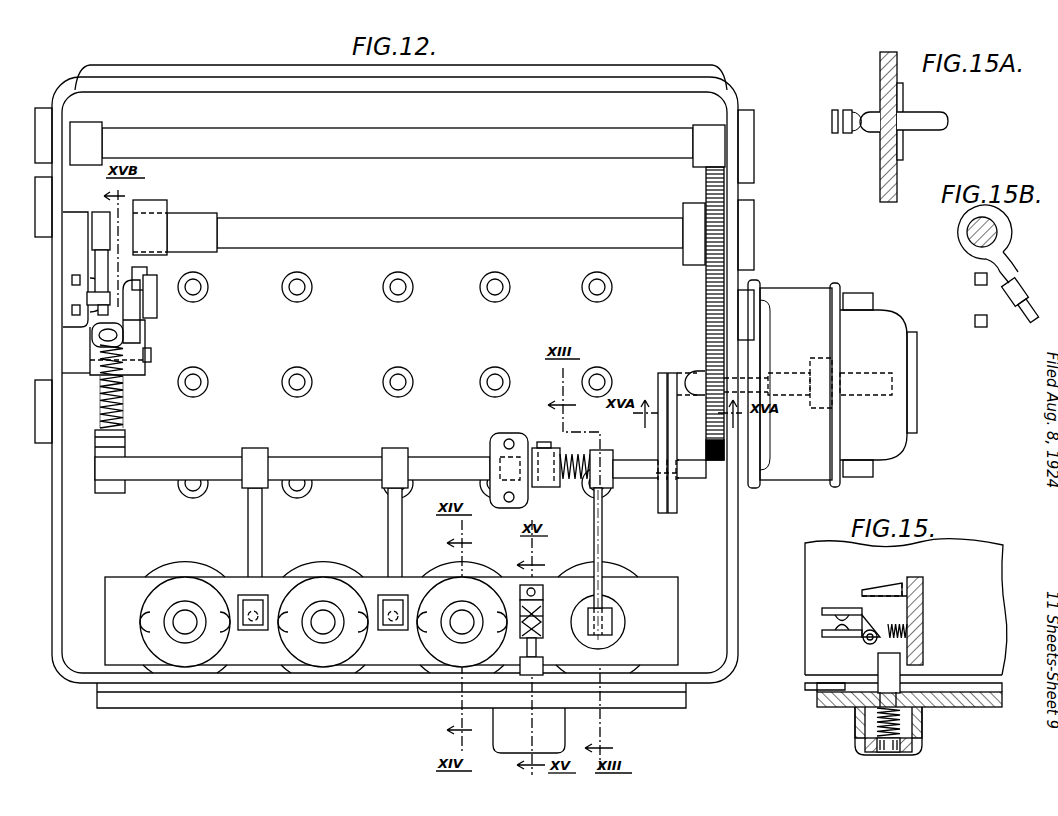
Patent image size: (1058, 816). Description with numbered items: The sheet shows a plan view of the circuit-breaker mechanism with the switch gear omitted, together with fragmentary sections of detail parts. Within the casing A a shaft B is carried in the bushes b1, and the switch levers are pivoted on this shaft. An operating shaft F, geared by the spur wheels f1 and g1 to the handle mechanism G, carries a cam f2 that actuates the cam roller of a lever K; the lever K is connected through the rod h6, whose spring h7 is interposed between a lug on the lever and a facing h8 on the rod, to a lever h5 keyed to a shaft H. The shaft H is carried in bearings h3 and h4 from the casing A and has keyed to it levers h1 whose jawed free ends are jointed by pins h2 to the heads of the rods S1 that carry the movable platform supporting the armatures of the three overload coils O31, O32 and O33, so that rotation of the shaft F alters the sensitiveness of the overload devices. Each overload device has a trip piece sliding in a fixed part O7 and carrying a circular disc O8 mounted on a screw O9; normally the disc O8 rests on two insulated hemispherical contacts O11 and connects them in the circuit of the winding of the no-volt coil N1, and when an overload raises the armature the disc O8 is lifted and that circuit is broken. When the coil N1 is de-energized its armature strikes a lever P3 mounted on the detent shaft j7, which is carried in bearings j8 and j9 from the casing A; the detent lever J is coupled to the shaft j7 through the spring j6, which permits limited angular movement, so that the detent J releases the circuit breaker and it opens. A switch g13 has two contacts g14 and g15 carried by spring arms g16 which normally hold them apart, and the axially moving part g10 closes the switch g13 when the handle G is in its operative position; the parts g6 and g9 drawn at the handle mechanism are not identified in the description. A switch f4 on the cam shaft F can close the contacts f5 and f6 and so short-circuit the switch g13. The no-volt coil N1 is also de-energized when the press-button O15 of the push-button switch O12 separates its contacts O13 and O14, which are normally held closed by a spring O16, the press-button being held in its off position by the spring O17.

In FIG. 12, the casing A is at (75, 92).
In FIG. 15, the casing A is at (963, 700).
In FIG. 12, the shaft B is at (333, 148).
In FIG. 12, the bushes b1 is at (96, 128).
In FIG. 12, the operating shaft F is at (492, 228).
In FIG. 15B, the operating shaft F is at (968, 238).
In FIG. 12, the spur wheel f1 is at (705, 232).
In FIG. 12, the cam f2 is at (157, 278).
In FIG. 12, the switch f4 is at (90, 262).
In FIG. 15B, the switch f4 is at (1020, 315).
In FIG. 12, the contact f5 is at (70, 321).
In FIG. 15B, the contact f5 is at (975, 326).
In FIG. 12, the contact f6 is at (73, 279).
In FIG. 15B, the contact f6 is at (975, 280).
In FIG. 12, the lever K is at (138, 337).
In FIG. 12, the levers h1 is at (151, 356).
In FIG. 12, the pin h2 is at (100, 345).
In FIG. 12, the bearing h3 is at (152, 298).
In FIG. 12, the bearing h4 is at (492, 450).
In FIG. 12, the lever h5 is at (612, 617).
In FIG. 12, the rod h6 is at (108, 398).
In FIG. 12, the spring h7 is at (113, 410).
In FIG. 12, the facing h8 is at (113, 432).
In FIG. 12, the shaft H is at (155, 480).
In FIG. 12, the detent lever J is at (546, 448).
In FIG. 12, the spring j6 is at (573, 488).
In FIG. 12, the detent shaft j7 is at (623, 480).
In FIG. 12, the bearing j8 is at (520, 496).
In FIG. 12, the bearing j9 is at (715, 470).
In FIG. 12, the spur wheel g1 is at (722, 446).
In FIG. 15A, the spur wheel g1 is at (880, 176).
In FIG. 12, the motor housing g6 is at (906, 404).
In FIG. 12, the motor shaft g9 is at (868, 397).
In FIG. 12, the axially moving part g10 is at (700, 372).
In FIG. 15A, the axially moving part g10 is at (870, 122).
In FIG. 12, the switch g13 is at (660, 440).
In FIG. 12, the contact g14 is at (660, 377).
In FIG. 15A, the contact g14 is at (832, 125).
In FIG. 12, the contact g15 is at (672, 373).
In FIG. 15A, the contact g15 is at (846, 108).
In FIG. 12, the spring arms g16 is at (682, 408).
In FIG. 15A, the spring arms g16 is at (849, 135).
In FIG. 12, the handle mechanism G is at (873, 469).
In FIG. 12, the overload coil O31 is at (193, 552).
In FIG. 12, the overload coil O32 is at (330, 552).
In FIG. 12, the overload coil O33 is at (467, 565).
In FIG. 12, the no-volt coil N1 is at (632, 574).
In FIG. 12, the fixed part O7 is at (151, 605).
In FIG. 12, the circular disc O8 is at (187, 592).
In FIG. 12, the screw O9 is at (182, 623).
In FIG. 12, the insulated hemispherical contacts O11 is at (217, 610).
In FIG. 12, the push-button switch O12 is at (533, 668).
In FIG. 15, the push-button switch O12 is at (878, 664).
In FIG. 12, the contact O13 is at (543, 610).
In FIG. 15, the contact O13 is at (832, 612).
In FIG. 12, the contact O14 is at (542, 632).
In FIG. 15, the contact O14 is at (832, 628).
In FIG. 15, the press-button O15 is at (888, 747).
In FIG. 15, the spring O16 is at (902, 633).
In FIG. 15, the spring O17 is at (890, 716).
In FIG. 12, the rods S1 is at (256, 632).
In FIG. 12, the lever P3 is at (604, 587).